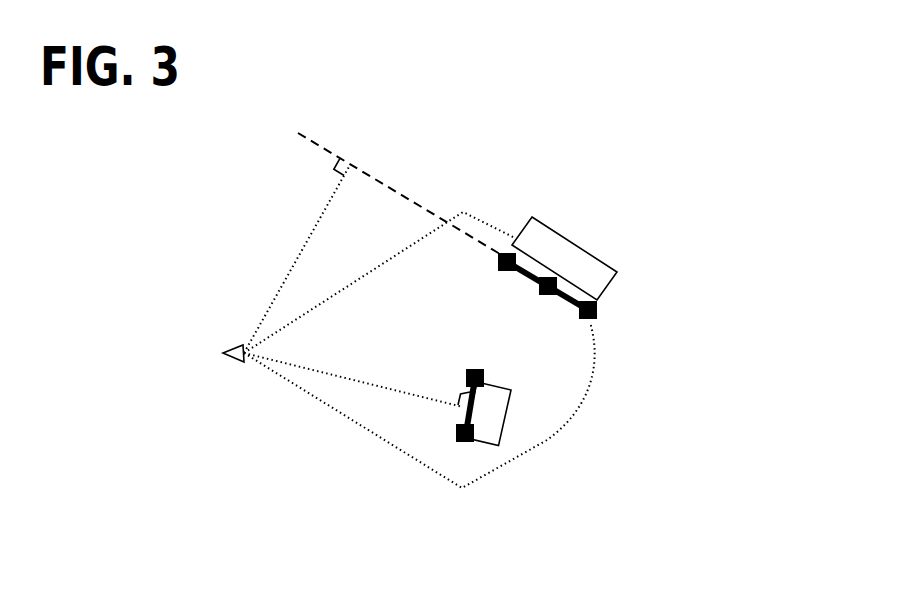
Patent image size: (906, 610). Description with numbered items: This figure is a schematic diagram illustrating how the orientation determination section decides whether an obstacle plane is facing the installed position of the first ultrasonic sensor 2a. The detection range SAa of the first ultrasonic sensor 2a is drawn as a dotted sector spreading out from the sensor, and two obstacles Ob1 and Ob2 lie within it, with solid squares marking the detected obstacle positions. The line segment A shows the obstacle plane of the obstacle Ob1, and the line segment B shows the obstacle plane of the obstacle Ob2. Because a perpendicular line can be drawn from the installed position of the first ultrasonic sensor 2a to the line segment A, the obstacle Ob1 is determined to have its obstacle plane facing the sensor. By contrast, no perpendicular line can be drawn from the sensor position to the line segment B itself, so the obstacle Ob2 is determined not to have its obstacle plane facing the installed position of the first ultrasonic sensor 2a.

The first ultrasonic sensor 2a is at (238, 345).
The detection range SAa is at (460, 489).
The obstacle Ob1 is at (505, 418).
The obstacle Ob2 is at (600, 258).
The line segment showing the obstacle plane of the obstacle Ob1 A is at (466, 419).
The line segment showing the obstacle plane of the obstacle Ob2 B is at (533, 278).